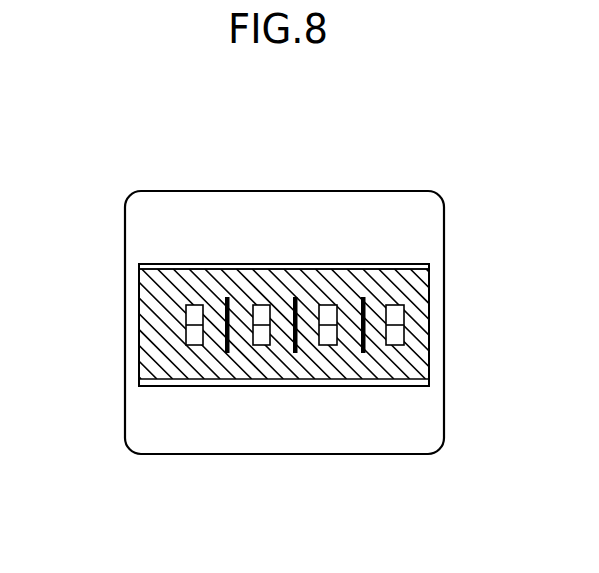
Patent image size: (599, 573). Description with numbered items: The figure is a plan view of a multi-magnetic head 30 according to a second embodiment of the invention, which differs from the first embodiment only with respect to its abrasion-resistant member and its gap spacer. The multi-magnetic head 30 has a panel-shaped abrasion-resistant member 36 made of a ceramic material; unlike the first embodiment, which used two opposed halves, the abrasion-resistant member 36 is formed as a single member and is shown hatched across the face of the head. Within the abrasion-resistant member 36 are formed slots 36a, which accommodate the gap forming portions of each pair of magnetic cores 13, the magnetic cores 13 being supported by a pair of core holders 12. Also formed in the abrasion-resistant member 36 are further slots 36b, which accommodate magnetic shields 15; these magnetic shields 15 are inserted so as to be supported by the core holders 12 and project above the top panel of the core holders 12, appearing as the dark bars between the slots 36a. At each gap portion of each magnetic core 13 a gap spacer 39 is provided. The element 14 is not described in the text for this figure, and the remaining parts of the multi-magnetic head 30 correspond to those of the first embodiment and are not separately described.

The multi-magnetic head 30 is at (261, 169).
The core holders 12 is at (379, 380).
The magnetic cores 13 is at (378, 267).
The housing 14 is at (417, 418).
The magnetic shields 15 is at (357, 282).
The abrasion-resistant member 36 is at (147, 269).
The slots 36a is at (197, 305).
The slots 36b is at (295, 298).
The gap spacer 39 is at (405, 319).